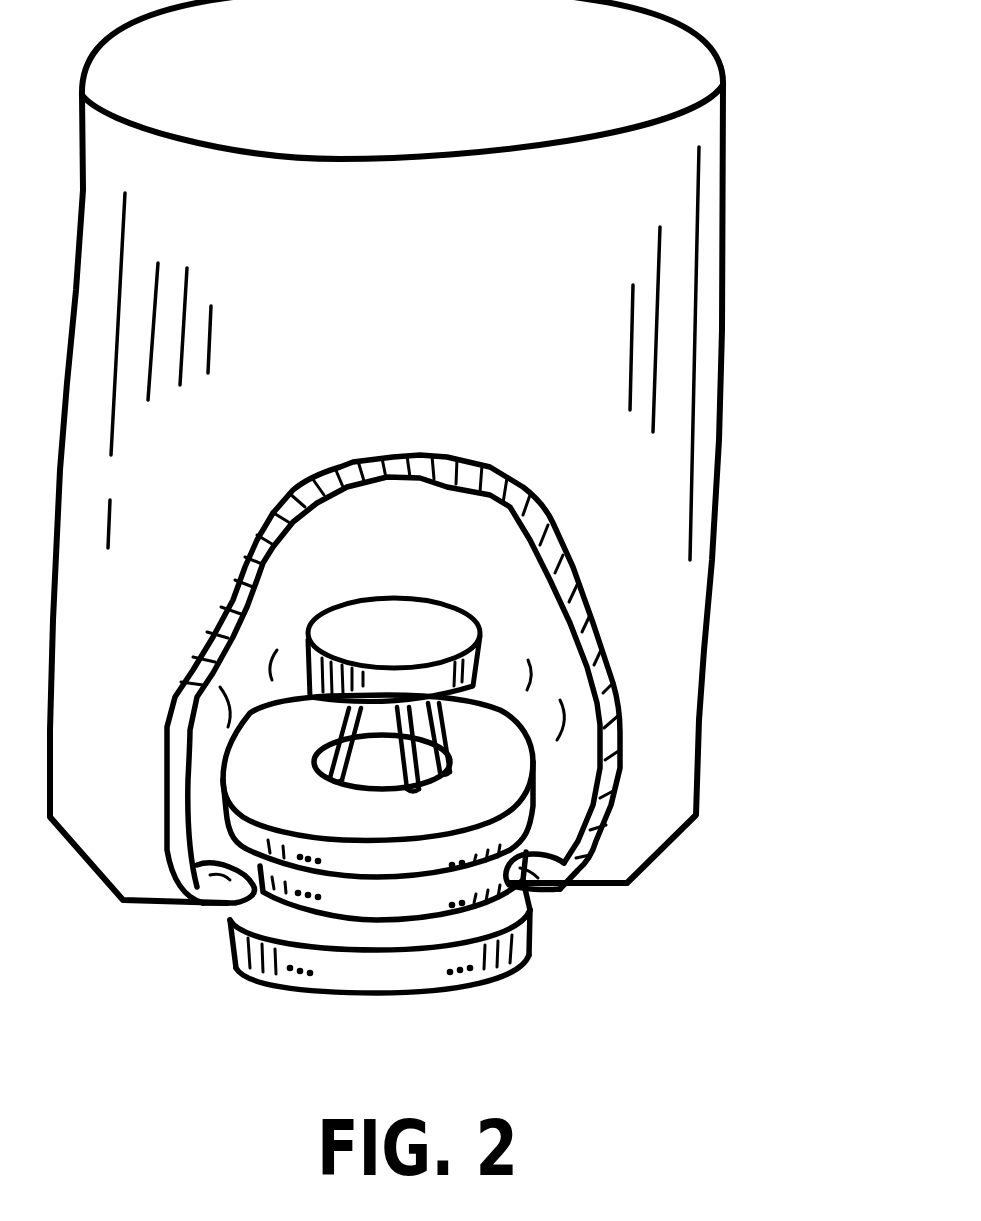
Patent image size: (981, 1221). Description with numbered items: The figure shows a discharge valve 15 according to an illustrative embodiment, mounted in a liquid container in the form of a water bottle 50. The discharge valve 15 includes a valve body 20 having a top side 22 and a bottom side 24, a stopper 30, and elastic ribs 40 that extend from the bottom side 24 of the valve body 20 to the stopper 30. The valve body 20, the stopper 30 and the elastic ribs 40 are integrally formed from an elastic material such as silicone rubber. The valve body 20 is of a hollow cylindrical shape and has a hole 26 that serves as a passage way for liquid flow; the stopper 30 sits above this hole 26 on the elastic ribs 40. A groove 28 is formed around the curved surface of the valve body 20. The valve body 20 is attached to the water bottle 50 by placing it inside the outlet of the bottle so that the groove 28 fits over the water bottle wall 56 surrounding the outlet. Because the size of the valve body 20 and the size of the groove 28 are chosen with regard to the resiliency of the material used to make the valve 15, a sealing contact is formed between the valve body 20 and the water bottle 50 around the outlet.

The discharge valve 15 is at (378, 803).
The valve body 20 is at (430, 989).
The top side 22 is at (508, 787).
The bottom side 24 is at (342, 995).
The hole 26 is at (373, 767).
The groove 28 is at (227, 903).
The stopper 30 is at (427, 600).
The elastic ribs 40 is at (312, 712).
The water bottle 50 is at (723, 308).
The water bottle wall 56 is at (470, 468).